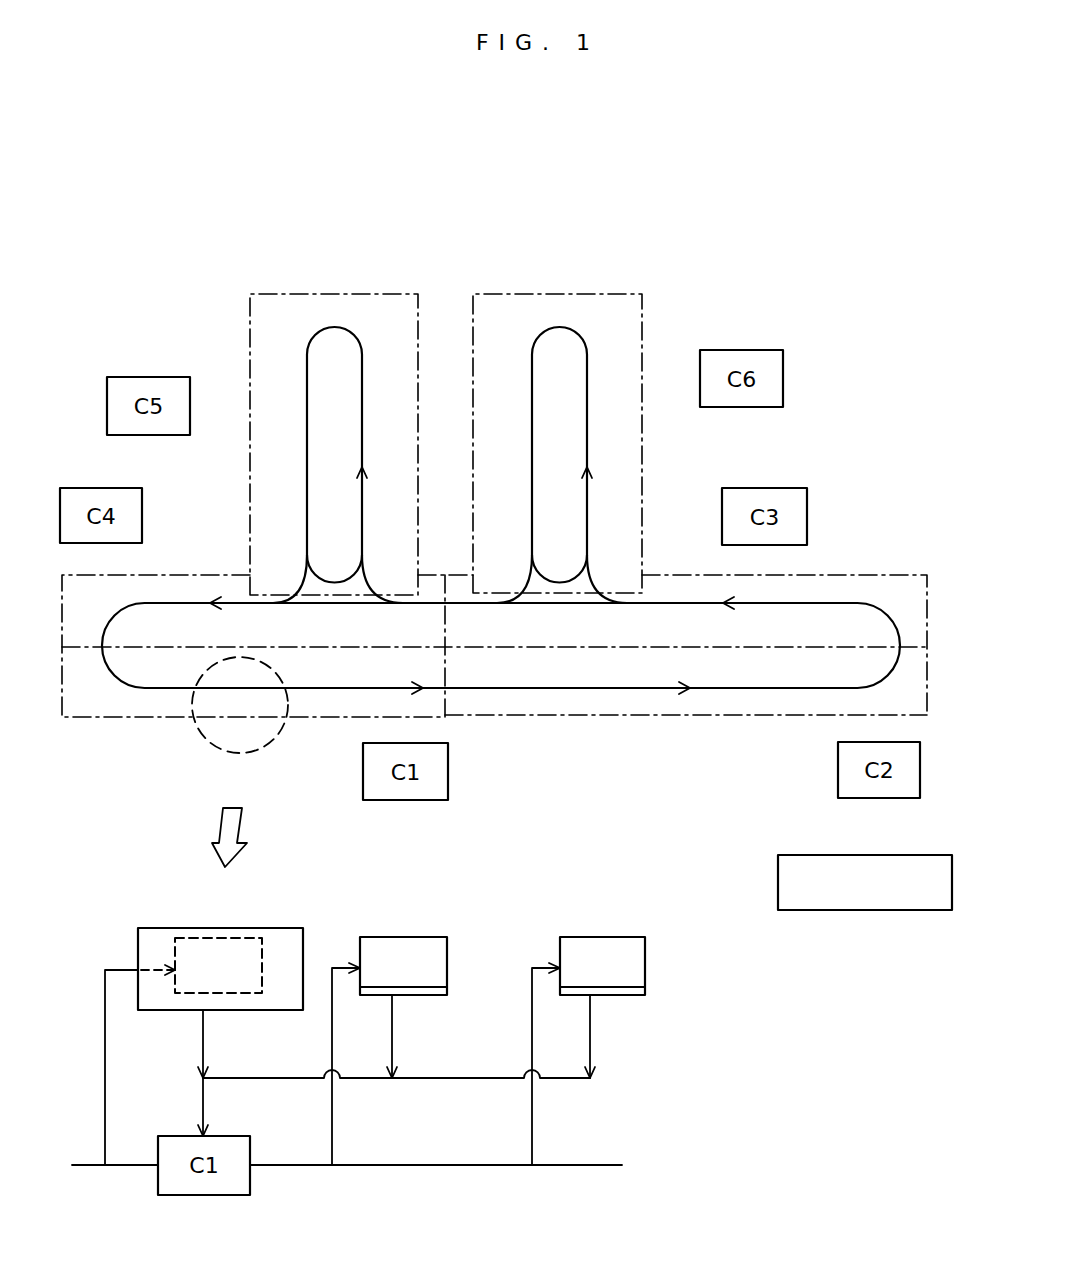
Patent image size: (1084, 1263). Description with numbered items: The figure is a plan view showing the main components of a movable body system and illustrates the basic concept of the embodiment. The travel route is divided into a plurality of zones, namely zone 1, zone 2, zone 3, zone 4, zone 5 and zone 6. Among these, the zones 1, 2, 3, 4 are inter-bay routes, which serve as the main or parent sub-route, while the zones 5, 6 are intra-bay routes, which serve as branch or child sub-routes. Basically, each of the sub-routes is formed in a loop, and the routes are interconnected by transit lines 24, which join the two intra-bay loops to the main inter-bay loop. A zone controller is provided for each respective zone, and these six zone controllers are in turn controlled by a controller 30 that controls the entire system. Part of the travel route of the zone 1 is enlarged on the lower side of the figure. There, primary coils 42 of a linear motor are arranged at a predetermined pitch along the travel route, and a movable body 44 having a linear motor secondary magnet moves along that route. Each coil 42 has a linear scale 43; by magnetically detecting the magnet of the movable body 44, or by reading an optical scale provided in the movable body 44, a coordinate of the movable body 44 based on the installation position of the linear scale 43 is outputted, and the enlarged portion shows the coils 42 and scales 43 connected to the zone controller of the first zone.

The zone 1 is at (113, 707).
The zone 2 is at (775, 705).
The zone 3 is at (854, 580).
The zone 4 is at (163, 586).
The zone 5 is at (262, 476).
The zone 6 is at (630, 457).
The transit line 24 is at (299, 581).
The controller 30 is at (884, 910).
The primary coil 42 is at (244, 968).
The linear scale 43 is at (225, 997).
The movable body 44 is at (272, 928).